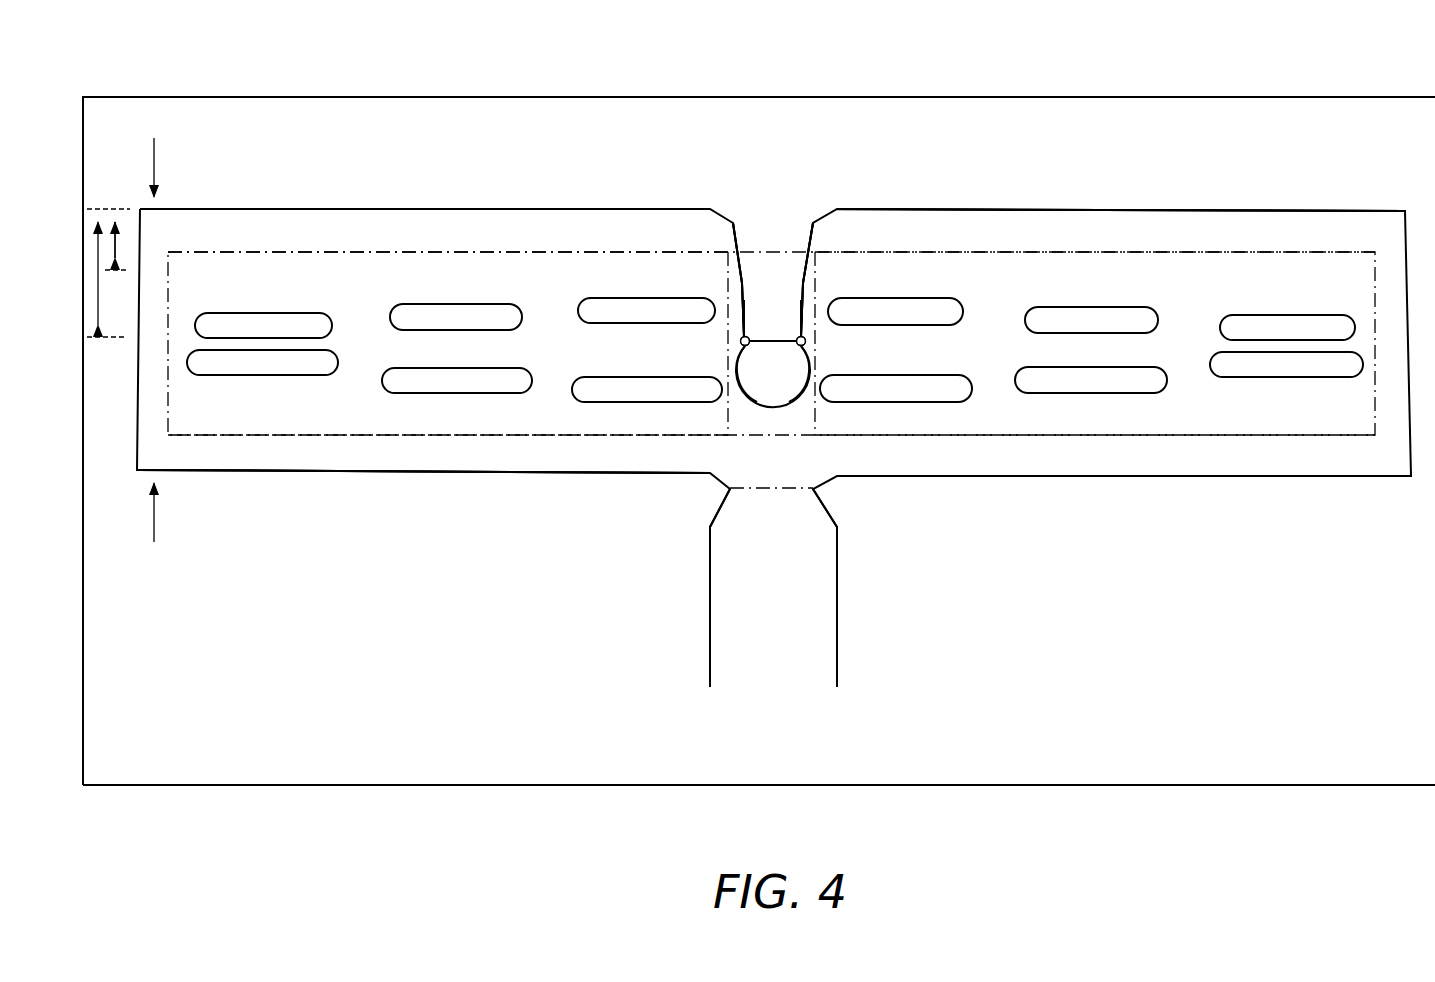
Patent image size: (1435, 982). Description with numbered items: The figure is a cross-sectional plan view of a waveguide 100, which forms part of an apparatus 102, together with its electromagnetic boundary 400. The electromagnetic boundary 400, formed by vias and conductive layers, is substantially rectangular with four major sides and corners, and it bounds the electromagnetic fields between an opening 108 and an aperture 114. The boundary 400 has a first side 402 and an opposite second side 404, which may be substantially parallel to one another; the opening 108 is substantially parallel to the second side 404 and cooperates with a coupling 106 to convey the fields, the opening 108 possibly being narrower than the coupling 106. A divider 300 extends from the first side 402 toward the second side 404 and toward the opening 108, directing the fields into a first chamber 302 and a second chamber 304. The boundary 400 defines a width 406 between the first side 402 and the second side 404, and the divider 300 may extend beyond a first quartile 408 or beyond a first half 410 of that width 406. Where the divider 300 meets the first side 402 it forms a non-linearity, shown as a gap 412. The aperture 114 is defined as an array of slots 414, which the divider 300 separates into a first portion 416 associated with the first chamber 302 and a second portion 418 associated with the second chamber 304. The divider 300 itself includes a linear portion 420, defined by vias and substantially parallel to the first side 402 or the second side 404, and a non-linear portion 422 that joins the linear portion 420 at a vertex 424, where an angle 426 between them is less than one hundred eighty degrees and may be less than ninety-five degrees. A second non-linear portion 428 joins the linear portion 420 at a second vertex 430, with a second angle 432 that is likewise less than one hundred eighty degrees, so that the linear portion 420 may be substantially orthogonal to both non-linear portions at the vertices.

The waveguide 100 is at (774, 397).
The apparatus 102 is at (156, 46).
The coupling 106 is at (682, 647).
The opening 108 is at (775, 490).
The aperture 114 is at (520, 440).
The divider 300 is at (725, 237).
The first chamber 302 is at (565, 510).
The second chamber 304 is at (1200, 514).
The electromagnetic boundary 400 is at (470, 481).
The first side 402 is at (983, 210).
The second side 404 is at (340, 474).
The width 406 is at (155, 180).
The first quartile 408 is at (118, 243).
The first half 410 is at (100, 300).
The gap 412 is at (742, 182).
The slots 414 is at (272, 312).
The first portion 416 is at (336, 437).
The second portion 418 is at (1043, 433).
The linear portion 420 is at (798, 347).
The non-linear portion 422 is at (744, 283).
The vertex 424 is at (737, 373).
The angle 426 is at (766, 338).
The second non-linear portion 428 is at (802, 285).
The second vertex 430 is at (801, 393).
The second angle 432 is at (779, 338).